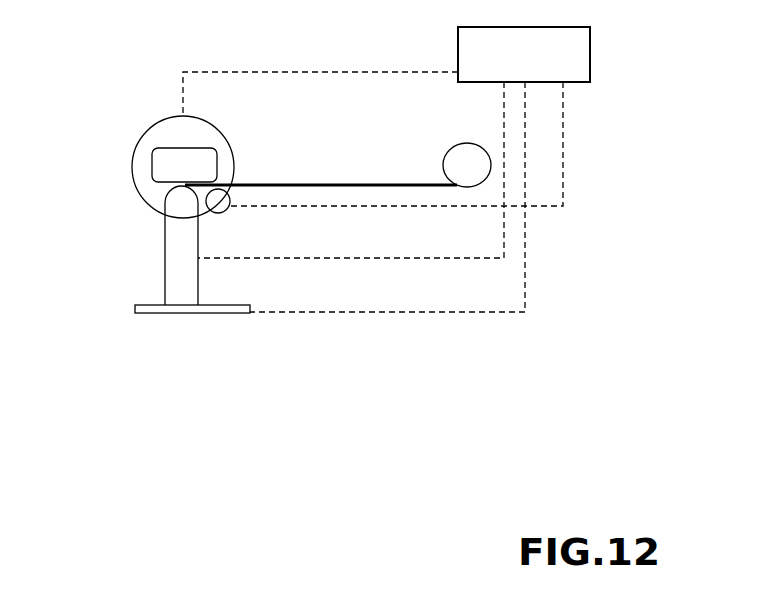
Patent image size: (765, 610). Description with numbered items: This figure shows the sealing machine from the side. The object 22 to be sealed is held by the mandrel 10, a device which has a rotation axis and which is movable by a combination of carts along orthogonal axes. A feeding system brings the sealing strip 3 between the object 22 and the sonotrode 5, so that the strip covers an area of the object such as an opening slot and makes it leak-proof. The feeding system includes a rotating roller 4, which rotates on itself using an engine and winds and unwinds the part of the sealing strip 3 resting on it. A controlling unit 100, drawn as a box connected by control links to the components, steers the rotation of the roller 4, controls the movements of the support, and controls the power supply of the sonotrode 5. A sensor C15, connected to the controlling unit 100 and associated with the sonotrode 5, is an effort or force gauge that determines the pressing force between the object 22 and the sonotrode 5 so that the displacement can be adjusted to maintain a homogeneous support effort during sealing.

The controlling unit 100 is at (583, 54).
The mandrel 10 is at (157, 133).
The object 22 is at (163, 168).
The sealing strip 3 is at (410, 187).
The sonotrode 5 is at (165, 240).
The rotating roller 4 is at (226, 212).
The sensor C15 is at (222, 313).